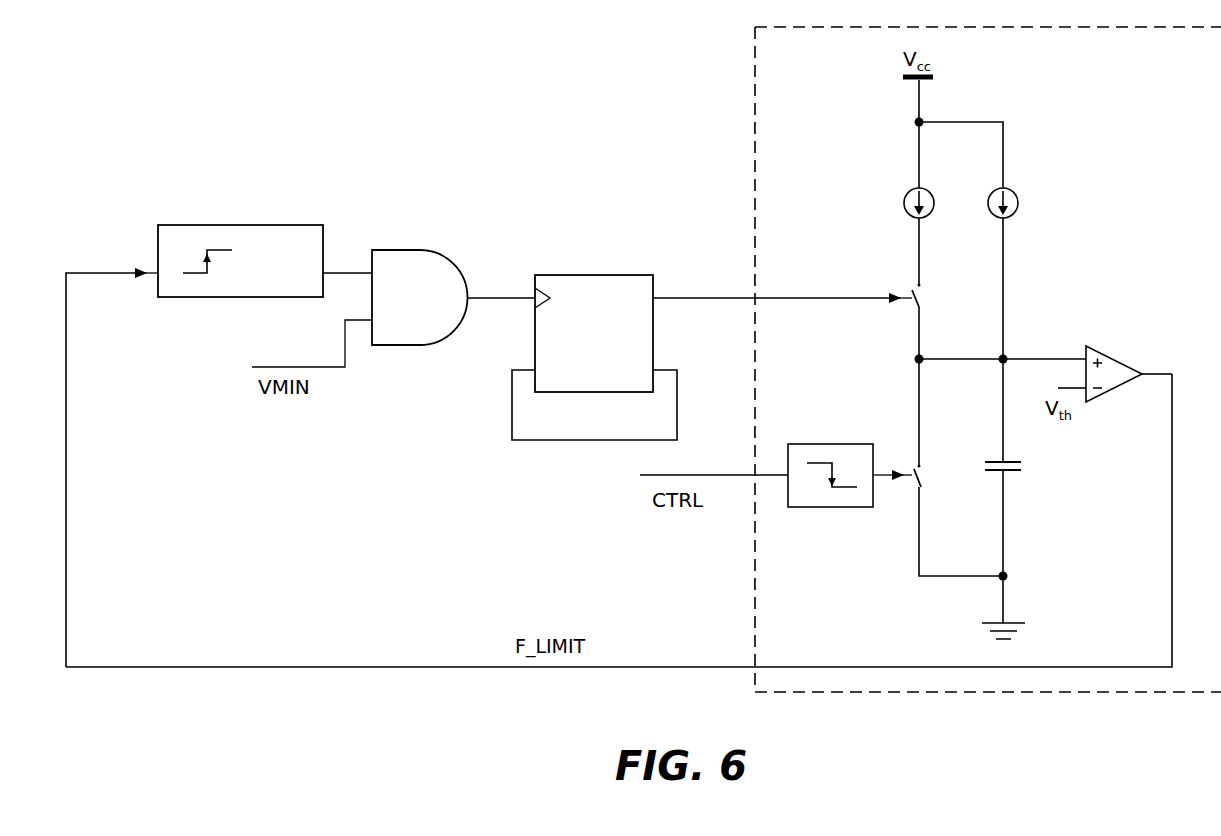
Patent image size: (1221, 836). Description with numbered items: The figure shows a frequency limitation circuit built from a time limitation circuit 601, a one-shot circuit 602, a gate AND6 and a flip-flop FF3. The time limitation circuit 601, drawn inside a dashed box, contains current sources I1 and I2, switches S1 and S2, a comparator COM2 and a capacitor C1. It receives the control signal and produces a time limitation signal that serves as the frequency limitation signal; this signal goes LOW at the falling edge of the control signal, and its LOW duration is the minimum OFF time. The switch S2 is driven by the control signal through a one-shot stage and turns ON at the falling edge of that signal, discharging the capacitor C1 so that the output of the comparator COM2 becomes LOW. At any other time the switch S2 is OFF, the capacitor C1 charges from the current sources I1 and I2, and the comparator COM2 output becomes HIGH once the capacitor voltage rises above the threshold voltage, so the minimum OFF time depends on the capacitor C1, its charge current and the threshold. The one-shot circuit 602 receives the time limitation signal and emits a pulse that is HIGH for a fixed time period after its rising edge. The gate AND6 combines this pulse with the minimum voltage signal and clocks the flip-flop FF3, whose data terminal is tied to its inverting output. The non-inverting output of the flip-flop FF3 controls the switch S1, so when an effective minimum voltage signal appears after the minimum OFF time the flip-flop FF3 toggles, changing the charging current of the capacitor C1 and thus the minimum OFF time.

The time limitation circuit 601 is at (916, 692).
The one-shot circuit 602 is at (197, 297).
The gate AND6 is at (420, 297).
The flip-flop FF3 is at (594, 344).
The current source I1 is at (903, 203).
The current source I2 is at (1018, 203).
The switch S1 is at (933, 299).
The switch S2 is at (934, 480).
The capacitor C1 is at (1023, 475).
The comparator COM2 is at (1128, 370).